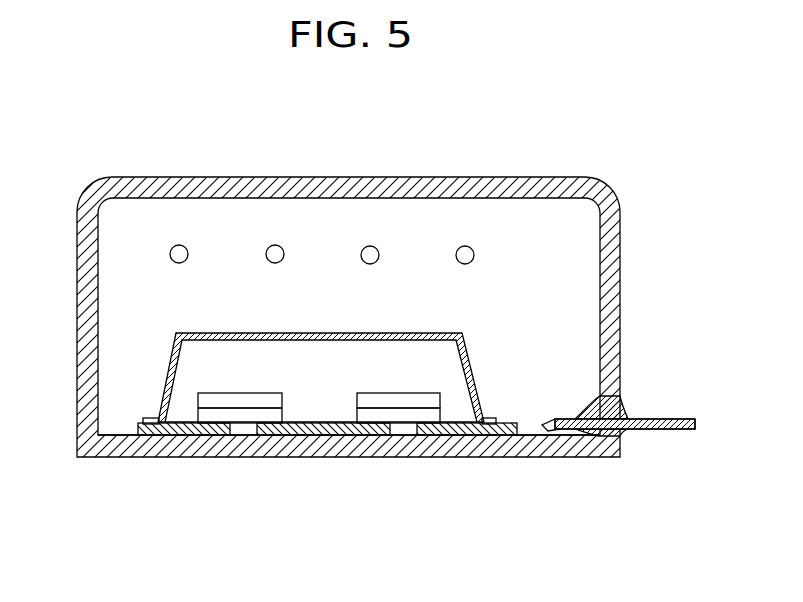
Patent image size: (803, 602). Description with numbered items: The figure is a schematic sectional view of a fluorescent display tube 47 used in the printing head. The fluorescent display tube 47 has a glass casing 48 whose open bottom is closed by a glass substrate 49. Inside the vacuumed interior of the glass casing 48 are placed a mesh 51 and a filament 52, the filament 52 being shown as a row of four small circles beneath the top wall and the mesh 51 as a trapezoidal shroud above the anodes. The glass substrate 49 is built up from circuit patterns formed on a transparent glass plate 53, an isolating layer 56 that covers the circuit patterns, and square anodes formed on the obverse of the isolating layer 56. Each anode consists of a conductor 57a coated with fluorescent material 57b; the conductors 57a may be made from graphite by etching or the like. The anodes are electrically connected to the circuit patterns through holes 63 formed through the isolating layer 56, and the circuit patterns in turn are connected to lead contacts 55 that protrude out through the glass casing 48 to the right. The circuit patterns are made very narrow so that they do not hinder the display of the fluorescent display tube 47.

The fluorescent display tube 47 is at (177, 152).
The glass casing 48 is at (534, 179).
The glass substrate 49 is at (141, 457).
The mesh 51 is at (367, 334).
The filament 52 is at (185, 247).
The transparent glass plate 53 is at (513, 437).
The lead contacts 55 is at (663, 419).
The isolating layer 56 is at (345, 437).
The conductors 57a is at (263, 420).
The fluorescent material 57b is at (228, 393).
The holes 63 is at (238, 435).